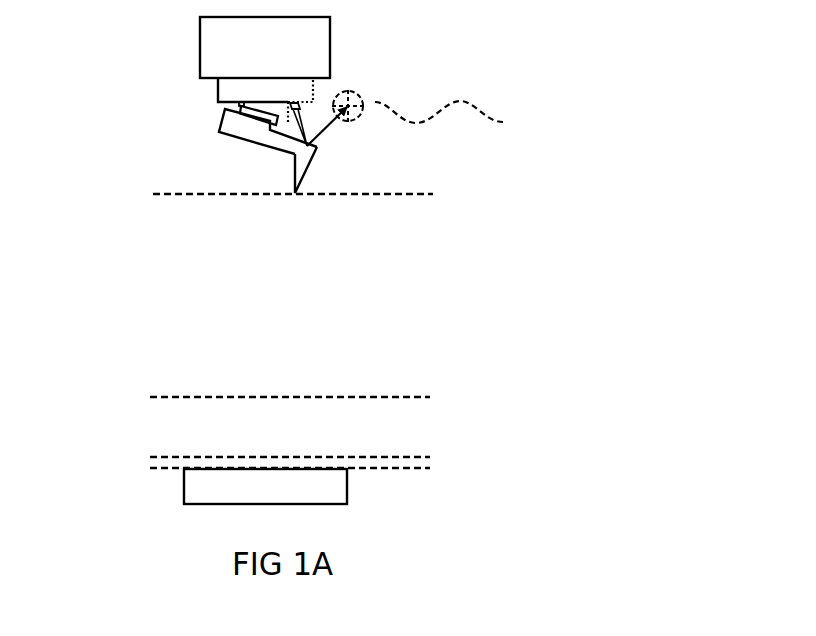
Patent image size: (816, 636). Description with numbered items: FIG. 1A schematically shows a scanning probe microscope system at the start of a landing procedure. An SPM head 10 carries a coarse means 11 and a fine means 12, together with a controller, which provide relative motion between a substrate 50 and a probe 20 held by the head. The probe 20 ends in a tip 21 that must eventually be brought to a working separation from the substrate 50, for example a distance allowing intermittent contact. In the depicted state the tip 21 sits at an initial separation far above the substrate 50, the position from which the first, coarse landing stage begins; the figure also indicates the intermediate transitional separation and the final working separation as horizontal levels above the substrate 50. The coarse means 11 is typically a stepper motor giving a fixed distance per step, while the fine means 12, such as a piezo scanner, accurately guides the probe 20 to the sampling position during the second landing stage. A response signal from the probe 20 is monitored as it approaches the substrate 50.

The SPM head 10 is at (134, 75).
The coarse translation means 11 is at (265, 47).
The fine translation means 12 is at (265, 100).
The probe 20 is at (217, 148).
The tip 21 is at (314, 176).
The substrate 50 is at (265, 486).